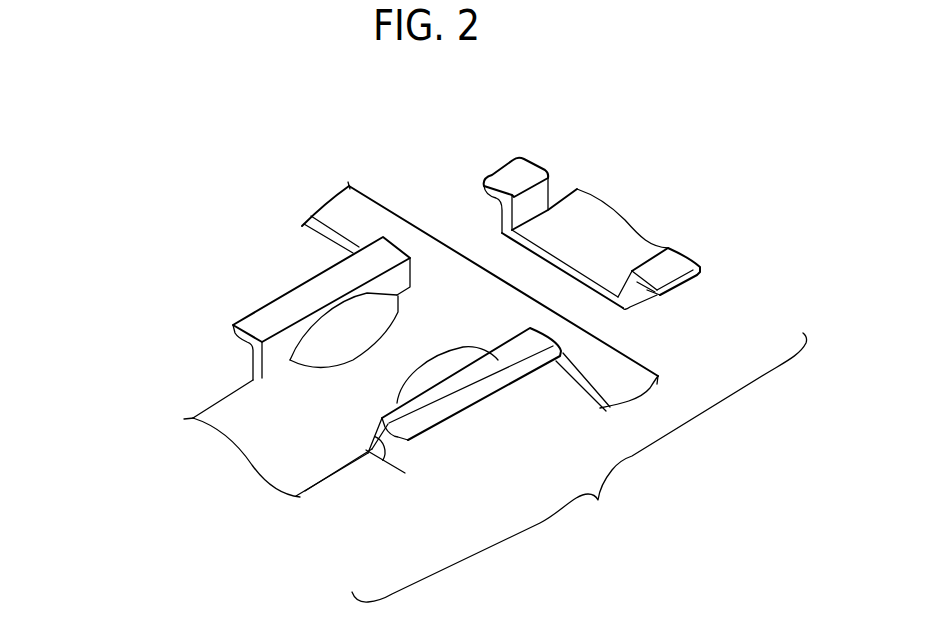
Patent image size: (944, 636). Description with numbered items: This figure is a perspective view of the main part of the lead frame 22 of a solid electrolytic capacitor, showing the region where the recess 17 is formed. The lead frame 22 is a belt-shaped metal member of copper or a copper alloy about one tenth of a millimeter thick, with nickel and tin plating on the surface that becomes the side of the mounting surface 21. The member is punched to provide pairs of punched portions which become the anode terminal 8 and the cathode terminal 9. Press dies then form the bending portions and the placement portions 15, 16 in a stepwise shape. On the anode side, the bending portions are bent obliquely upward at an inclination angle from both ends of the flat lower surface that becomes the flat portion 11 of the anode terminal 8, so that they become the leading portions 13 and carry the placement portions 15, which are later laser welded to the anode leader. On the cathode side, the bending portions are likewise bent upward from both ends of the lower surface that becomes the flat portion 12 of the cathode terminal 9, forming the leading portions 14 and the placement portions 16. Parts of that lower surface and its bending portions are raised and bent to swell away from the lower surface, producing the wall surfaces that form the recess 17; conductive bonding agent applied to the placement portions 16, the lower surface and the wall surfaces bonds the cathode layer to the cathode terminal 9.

The cathode terminal 9 is at (382, 205).
The flat portion 12 is at (287, 437).
The recess 17 is at (332, 327).
The placement portion 16 is at (257, 322).
The leading portion 14 is at (280, 345).
The mounting surface 21 is at (351, 475).
The lead frame 22 is at (579, 467).
The placement portion 15 is at (503, 172).
The leading portion 13 is at (542, 195).
The flat portion 11 is at (605, 225).
The anode terminal 8 is at (643, 297).